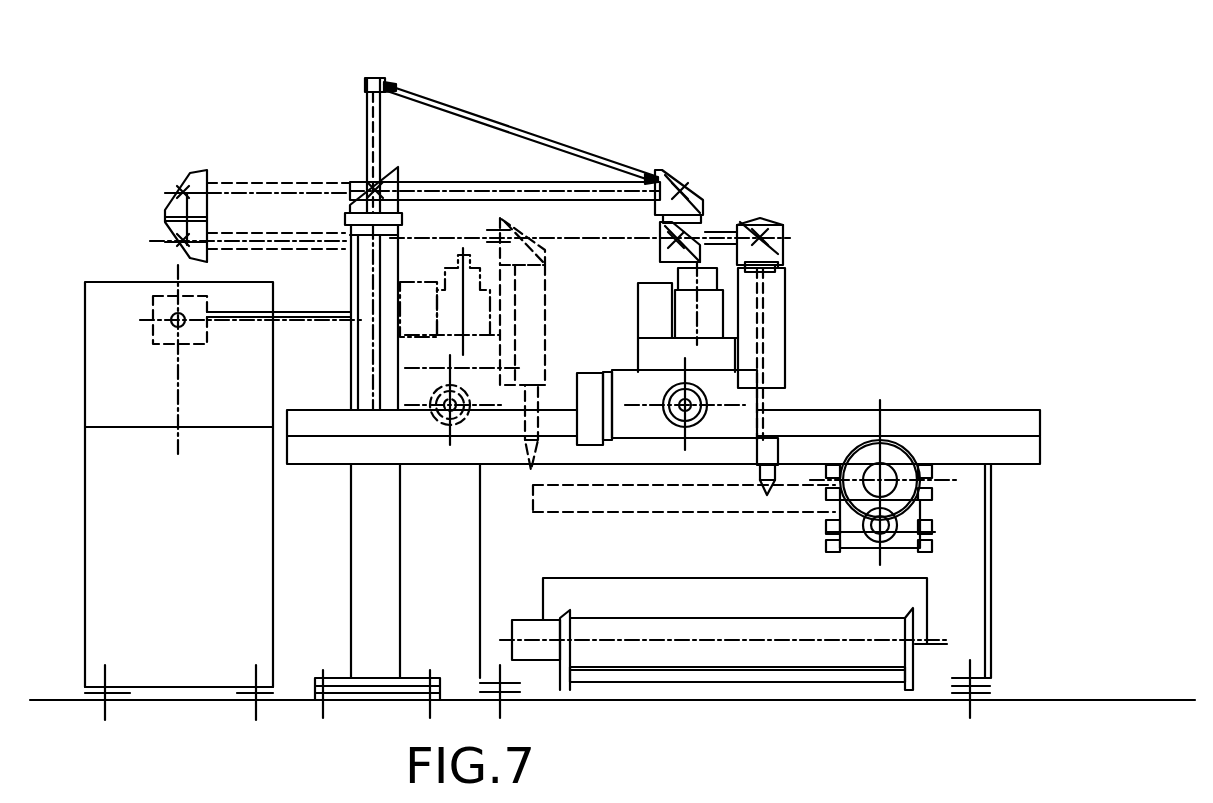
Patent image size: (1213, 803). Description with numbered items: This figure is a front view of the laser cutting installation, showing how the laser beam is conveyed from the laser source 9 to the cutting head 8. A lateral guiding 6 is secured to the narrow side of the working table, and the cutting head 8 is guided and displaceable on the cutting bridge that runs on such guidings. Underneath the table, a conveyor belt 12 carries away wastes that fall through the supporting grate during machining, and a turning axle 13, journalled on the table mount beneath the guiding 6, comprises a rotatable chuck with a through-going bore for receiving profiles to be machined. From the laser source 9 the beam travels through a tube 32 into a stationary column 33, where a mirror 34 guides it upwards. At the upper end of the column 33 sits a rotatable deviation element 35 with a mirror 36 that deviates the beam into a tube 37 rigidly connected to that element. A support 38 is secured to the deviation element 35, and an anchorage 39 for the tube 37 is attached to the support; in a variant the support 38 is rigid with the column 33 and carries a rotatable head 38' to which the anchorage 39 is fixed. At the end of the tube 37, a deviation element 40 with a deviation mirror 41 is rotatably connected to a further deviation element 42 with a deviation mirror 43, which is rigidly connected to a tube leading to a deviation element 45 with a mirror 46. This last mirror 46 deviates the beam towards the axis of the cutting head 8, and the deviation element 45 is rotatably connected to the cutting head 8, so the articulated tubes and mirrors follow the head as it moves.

The lateral guiding 6 is at (977, 418).
The cutting head 8 is at (782, 322).
The laser source 9 is at (100, 353).
The conveyor belt 12 is at (676, 656).
The turning axle 13 is at (887, 455).
The tube 32 is at (313, 310).
The column 33 is at (358, 346).
The mirror 34 is at (400, 306).
The rotatable deviation element 35 is at (356, 206).
The mirror 36 is at (366, 176).
The tube 37 is at (480, 186).
The support 38 is at (349, 117).
The rotatable head 38' is at (409, 51).
The anchorage 39 is at (450, 104).
The deviation element 40 is at (667, 182).
The deviation mirror 41 is at (683, 182).
The deviation element 42 is at (706, 216).
The deviation mirror 43 is at (666, 240).
The deviation element 45 is at (778, 253).
The mirror 46 is at (776, 238).